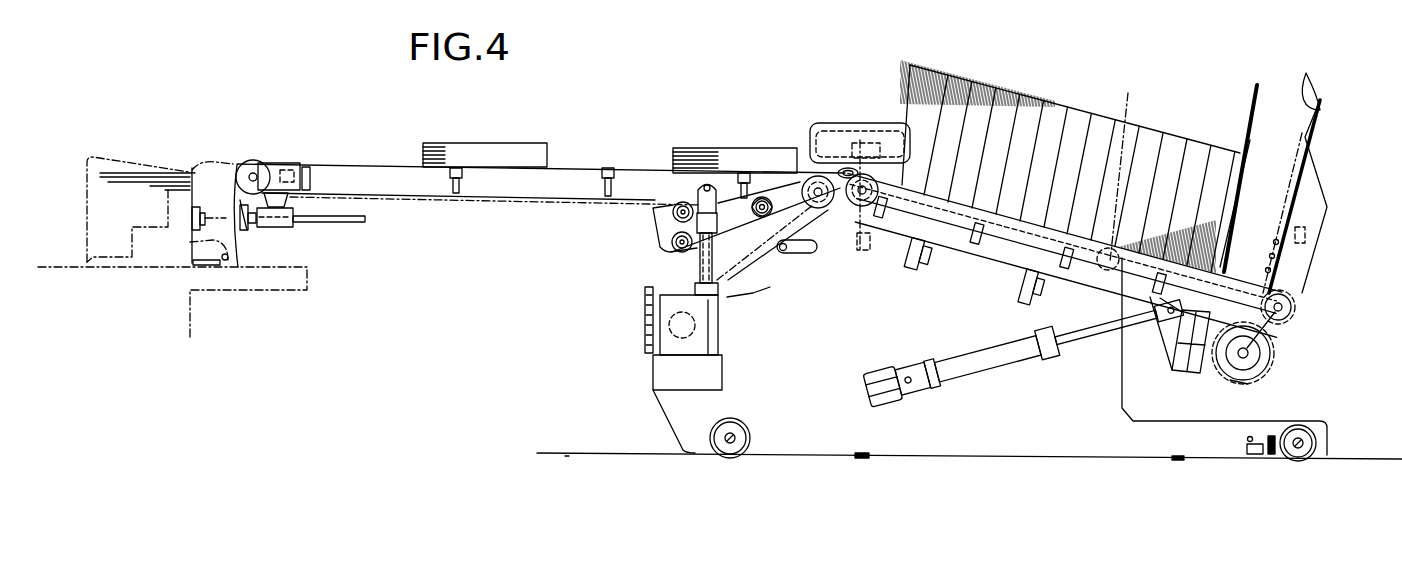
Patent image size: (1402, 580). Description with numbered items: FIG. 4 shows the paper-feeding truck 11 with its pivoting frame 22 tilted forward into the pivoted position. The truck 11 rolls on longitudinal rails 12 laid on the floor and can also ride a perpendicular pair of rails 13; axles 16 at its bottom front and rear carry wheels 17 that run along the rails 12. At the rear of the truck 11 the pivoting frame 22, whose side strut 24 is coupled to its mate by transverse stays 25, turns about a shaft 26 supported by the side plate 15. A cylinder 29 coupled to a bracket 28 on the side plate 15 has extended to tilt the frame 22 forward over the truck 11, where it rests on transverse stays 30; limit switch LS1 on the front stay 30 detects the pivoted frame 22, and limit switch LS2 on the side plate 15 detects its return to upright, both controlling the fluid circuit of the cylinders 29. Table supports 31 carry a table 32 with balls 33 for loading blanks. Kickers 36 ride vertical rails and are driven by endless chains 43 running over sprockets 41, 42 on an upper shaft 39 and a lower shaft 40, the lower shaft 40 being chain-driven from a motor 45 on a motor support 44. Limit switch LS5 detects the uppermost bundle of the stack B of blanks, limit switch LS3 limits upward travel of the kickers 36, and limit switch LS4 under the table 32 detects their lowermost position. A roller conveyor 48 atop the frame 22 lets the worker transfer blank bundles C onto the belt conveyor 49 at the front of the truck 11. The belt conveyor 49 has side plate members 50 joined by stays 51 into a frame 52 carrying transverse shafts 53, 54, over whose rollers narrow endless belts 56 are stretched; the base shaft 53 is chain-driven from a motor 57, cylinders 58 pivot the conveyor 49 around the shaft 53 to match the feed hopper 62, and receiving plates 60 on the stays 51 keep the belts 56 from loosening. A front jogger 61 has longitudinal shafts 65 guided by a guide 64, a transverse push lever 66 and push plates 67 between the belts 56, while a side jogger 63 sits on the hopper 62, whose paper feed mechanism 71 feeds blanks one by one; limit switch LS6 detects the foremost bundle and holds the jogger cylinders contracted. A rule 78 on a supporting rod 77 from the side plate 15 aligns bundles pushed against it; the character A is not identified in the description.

The truck 11 is at (666, 423).
The longitudinal rails 12 is at (572, 447).
The rails 13 is at (862, 458).
The side plate 15 is at (1058, 446).
The axles 16 is at (731, 441).
The wheels 17 is at (748, 447).
The pivoting frame 22 is at (1112, 284).
The side strut 24 is at (1006, 245).
The transverse stays 25 is at (1143, 302).
The shaft 26 is at (1124, 165).
The bracket 28 is at (888, 402).
The cylinder 29 is at (984, 370).
The transverse stays 30 is at (917, 264).
The table supports 31 is at (1318, 192).
The table 32 is at (1322, 106).
The balls 33 is at (1309, 86).
The kicker 36 is at (1241, 147).
The upper transverse shaft 39 is at (862, 212).
The lower transverse shaft 40 is at (1296, 312).
The sprocket 41 is at (850, 209).
The sprocket 42 is at (1291, 301).
The endless chain 43 is at (1097, 256).
The motor support 44 is at (1190, 372).
The motor 45 is at (1269, 362).
The roller conveyor 48 is at (845, 170).
The belt conveyor 49 is at (331, 162).
The side plate members 50 is at (572, 178).
The stays 51 is at (605, 191).
The frame 52 is at (447, 193).
The transverse shaft 53 is at (814, 188).
The transverse shaft 54 is at (252, 175).
The endless belts 56 is at (620, 167).
The motor 57 is at (650, 320).
The cylinders 58 is at (697, 262).
The receiving plates 60 is at (377, 164).
The front jogger 61 is at (287, 229).
The feed hopper 62 is at (56, 262).
The side jogger 63 is at (107, 158).
The guide 64 is at (296, 212).
The longitudinal movable shafts 65 is at (366, 222).
The transverse push lever 66 is at (247, 230).
The push plates 67 is at (238, 267).
The paper feed mechanism 71 is at (85, 185).
The supporting rod 77 is at (857, 145).
The rule 78 is at (878, 122).
The machine A is at (182, 180).
The stack of blanks B is at (1006, 85).
The bundles of blanks C is at (483, 142).
The limit switch LS1 is at (934, 262).
The limit switch LS2 is at (1256, 456).
The limit switch LS3 is at (930, 234).
The limit switch LS4 is at (1270, 256).
The limit switch LS5 is at (890, 186).
The limit switch LS6 is at (287, 168).